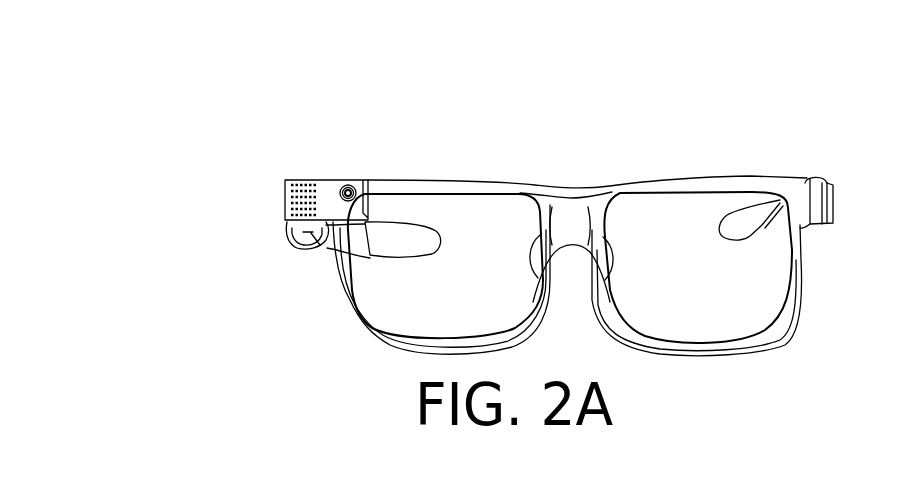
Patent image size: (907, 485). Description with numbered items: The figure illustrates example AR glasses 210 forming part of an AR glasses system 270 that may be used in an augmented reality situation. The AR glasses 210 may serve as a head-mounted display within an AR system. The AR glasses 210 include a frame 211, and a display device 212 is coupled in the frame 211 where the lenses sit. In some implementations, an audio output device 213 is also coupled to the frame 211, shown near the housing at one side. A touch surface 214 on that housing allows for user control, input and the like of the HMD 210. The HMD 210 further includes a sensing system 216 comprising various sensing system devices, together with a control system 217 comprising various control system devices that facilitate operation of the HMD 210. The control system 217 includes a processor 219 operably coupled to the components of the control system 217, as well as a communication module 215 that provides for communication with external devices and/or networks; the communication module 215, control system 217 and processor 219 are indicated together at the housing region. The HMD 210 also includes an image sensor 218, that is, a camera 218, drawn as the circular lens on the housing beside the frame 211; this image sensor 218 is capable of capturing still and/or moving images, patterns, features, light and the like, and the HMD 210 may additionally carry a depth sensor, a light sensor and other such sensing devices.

The AR glasses system 270 is at (258, 118).
The AR glasses 210 is at (263, 167).
The frame 211 is at (568, 208).
The display device 212 is at (424, 306).
The audio output device 213 is at (302, 243).
The touch surface 214 is at (286, 188).
The communication module 215 is at (327, 176).
The sensing system 216 is at (290, 210).
The control system 217 is at (327, 176).
The image sensor 218 is at (350, 183).
The processor 219 is at (311, 184).